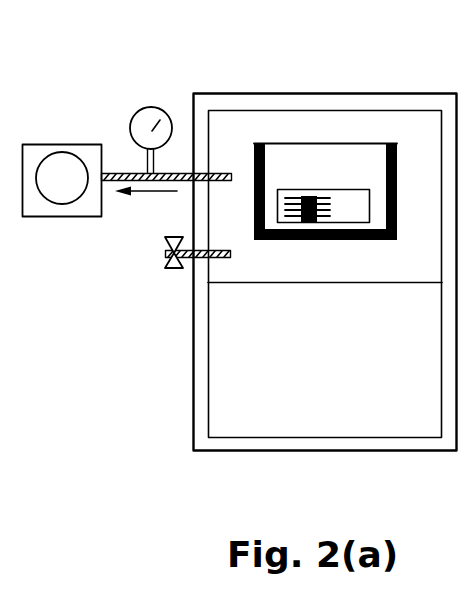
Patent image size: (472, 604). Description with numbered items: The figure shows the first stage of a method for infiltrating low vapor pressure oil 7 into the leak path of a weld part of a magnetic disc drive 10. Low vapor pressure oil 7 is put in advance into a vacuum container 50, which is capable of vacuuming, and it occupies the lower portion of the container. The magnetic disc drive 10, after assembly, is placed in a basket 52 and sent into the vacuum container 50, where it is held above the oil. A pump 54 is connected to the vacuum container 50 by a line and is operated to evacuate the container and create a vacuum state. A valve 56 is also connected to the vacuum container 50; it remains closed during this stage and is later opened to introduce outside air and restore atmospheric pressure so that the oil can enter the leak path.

The vacuum container 50 is at (420, 107).
The basket 52 is at (257, 143).
The magnetic disc drive 10 is at (345, 190).
The pump 54 is at (40, 149).
The valve 56 is at (173, 270).
The low vapor pressure oil 7 is at (230, 372).